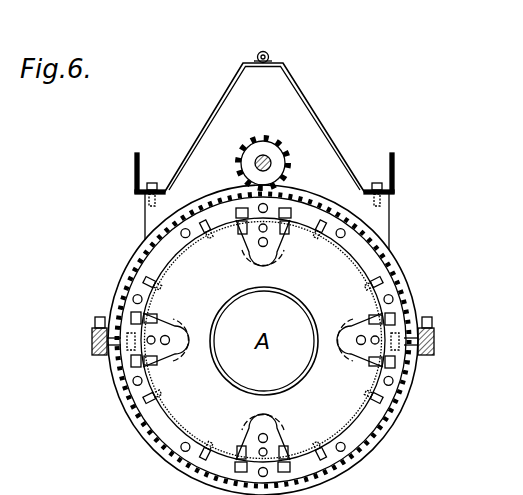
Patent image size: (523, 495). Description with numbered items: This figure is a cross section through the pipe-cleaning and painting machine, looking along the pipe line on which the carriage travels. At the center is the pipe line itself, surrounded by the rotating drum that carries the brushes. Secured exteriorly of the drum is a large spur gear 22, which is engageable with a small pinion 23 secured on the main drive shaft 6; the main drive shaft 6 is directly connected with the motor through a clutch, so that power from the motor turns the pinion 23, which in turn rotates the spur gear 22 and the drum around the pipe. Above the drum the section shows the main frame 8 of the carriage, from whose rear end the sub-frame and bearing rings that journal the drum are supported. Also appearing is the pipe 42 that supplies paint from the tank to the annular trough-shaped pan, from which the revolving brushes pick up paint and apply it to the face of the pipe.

The pipe 42 is at (260, 52).
The pinion 23 is at (277, 149).
The main drive shaft 6 is at (272, 163).
The main frame 8 is at (397, 170).
The spur gear 22 is at (398, 282).